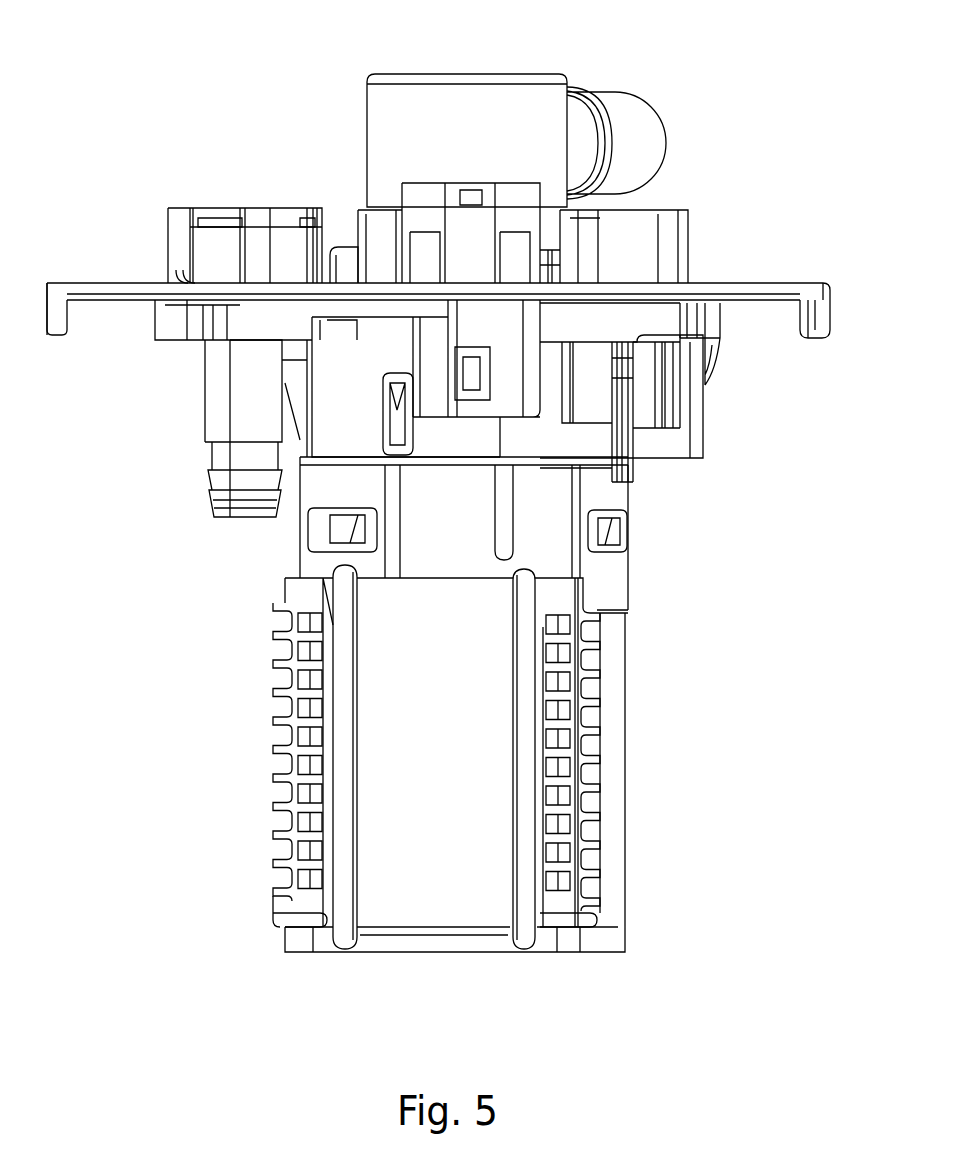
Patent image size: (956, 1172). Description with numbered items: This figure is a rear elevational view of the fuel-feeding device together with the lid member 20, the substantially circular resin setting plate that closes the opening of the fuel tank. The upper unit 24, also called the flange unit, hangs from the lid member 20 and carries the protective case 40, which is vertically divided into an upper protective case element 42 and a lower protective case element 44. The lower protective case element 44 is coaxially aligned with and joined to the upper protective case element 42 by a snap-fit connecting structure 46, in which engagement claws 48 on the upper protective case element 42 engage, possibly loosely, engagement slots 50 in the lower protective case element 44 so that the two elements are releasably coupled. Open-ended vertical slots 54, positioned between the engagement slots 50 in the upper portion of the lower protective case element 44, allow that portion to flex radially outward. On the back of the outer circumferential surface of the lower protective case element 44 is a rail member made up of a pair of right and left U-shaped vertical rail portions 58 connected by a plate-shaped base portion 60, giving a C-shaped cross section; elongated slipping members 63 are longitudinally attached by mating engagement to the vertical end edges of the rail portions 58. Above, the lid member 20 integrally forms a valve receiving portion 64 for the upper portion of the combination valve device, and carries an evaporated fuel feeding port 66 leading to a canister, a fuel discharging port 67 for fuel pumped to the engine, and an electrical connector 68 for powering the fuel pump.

The lid member 20 is at (743, 283).
The upper unit 24 is at (691, 685).
The protective case 40 is at (215, 428).
The upper protective case element 42 is at (337, 410).
The lower protective case element 44 is at (333, 487).
The snap-fit connecting structure 46 is at (467, 550).
The engagement claw 48 is at (337, 522).
The engagement slot 50 is at (320, 533).
The vertical slot 54 is at (495, 493).
The rail portion 58 is at (315, 897).
The base portion 60 is at (430, 902).
The slipping member 63 is at (522, 688).
The valve receiving portion 64 is at (352, 258).
The evaporated fuel feeding port 66 is at (633, 122).
The fuel discharging port 67 is at (217, 368).
The electrical connector 68 is at (637, 220).